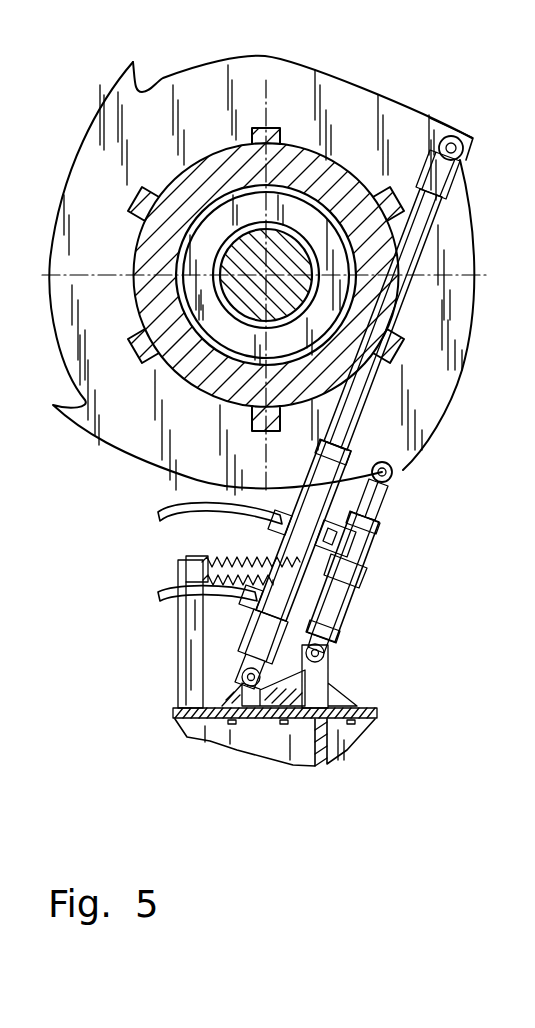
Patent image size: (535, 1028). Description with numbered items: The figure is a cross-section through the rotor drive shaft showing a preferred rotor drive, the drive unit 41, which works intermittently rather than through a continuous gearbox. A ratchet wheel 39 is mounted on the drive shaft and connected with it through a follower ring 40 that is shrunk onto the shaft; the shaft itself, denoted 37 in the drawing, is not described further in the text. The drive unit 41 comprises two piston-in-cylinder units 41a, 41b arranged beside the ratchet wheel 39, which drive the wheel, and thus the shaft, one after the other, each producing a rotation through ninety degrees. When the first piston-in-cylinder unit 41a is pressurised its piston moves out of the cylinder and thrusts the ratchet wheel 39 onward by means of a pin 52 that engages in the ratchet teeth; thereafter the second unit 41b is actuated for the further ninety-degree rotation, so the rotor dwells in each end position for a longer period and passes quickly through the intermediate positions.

The shaft 37 is at (281, 249).
The ratchet wheel 39 is at (362, 82).
The follower ring 40 is at (207, 182).
The drive unit 41 is at (330, 451).
The piston-in-cylinder unit 41a is at (352, 609).
The piston-in-cylinder unit 41b is at (337, 503).
The pin 52 is at (387, 456).